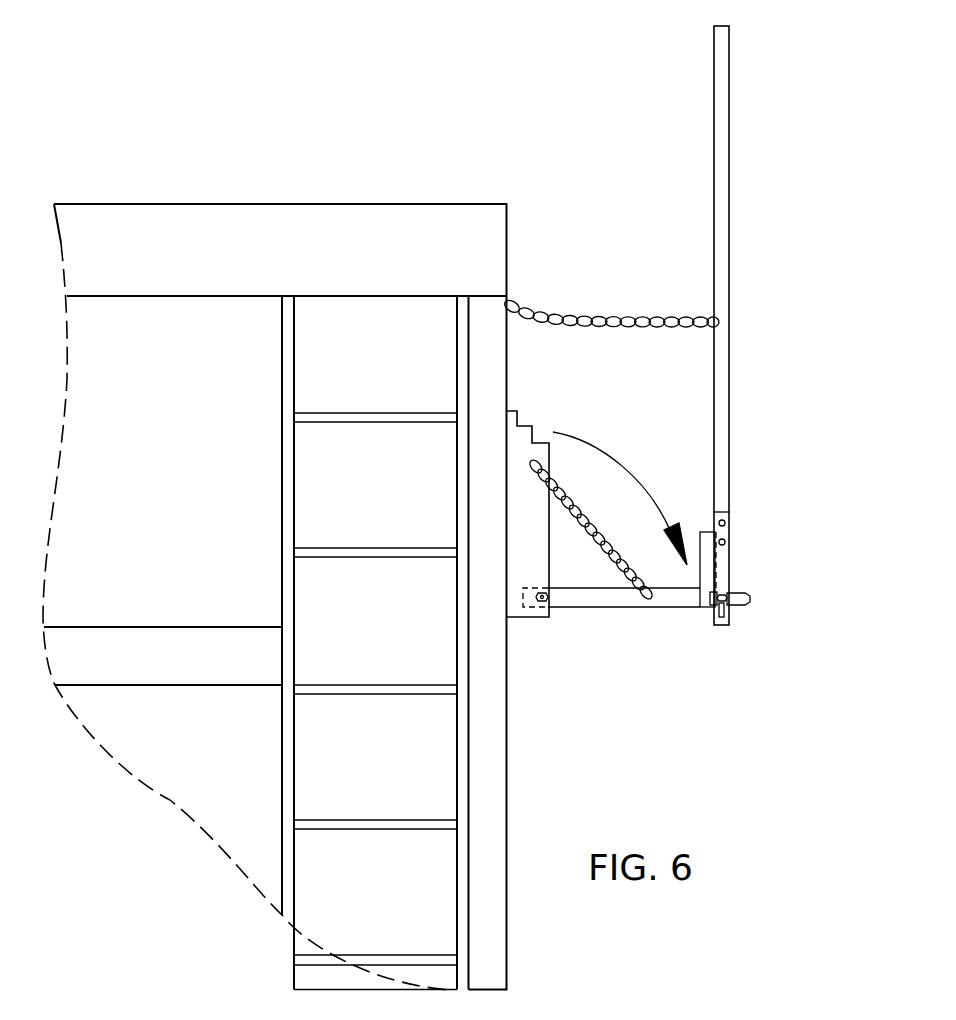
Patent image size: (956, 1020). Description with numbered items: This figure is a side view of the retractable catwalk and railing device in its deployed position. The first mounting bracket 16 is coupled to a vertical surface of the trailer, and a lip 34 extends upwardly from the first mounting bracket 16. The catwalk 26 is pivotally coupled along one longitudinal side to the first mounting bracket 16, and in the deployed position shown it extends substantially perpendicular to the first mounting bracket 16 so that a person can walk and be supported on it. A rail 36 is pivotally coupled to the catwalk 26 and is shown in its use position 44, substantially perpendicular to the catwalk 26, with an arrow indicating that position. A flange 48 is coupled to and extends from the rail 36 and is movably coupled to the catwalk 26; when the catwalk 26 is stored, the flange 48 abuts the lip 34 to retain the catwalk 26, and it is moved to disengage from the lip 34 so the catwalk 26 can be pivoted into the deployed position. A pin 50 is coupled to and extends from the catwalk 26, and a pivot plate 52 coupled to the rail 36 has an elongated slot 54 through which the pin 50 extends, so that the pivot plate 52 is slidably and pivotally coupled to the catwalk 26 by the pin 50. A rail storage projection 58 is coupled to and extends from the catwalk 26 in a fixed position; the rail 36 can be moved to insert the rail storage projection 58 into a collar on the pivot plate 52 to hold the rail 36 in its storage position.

The first mounting bracket 16 is at (533, 550).
The catwalk 26 is at (608, 603).
The lip 34 is at (531, 411).
The rail 36 is at (724, 257).
The use position 44 is at (785, 367).
The flange 48 is at (702, 607).
The pin 50 is at (725, 583).
The pivot plate 52 is at (723, 558).
The elongated slot 54 is at (721, 627).
The rail storage projection 58 is at (753, 598).